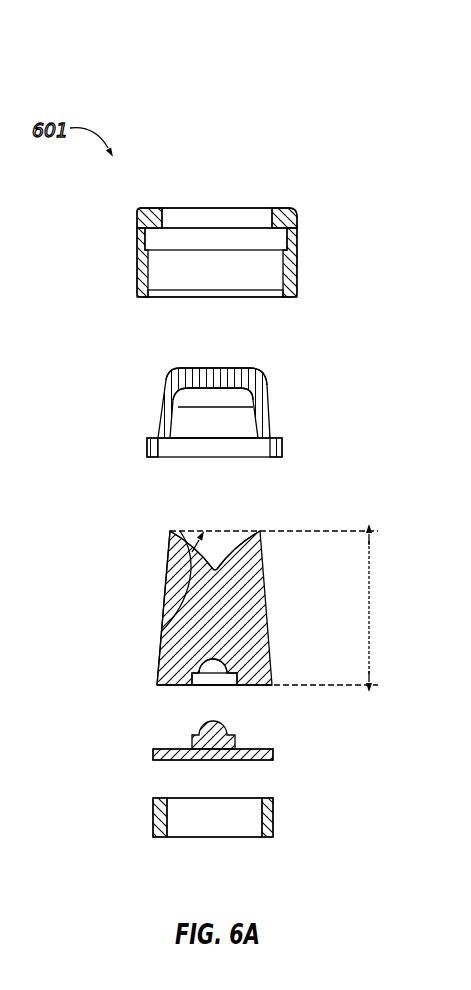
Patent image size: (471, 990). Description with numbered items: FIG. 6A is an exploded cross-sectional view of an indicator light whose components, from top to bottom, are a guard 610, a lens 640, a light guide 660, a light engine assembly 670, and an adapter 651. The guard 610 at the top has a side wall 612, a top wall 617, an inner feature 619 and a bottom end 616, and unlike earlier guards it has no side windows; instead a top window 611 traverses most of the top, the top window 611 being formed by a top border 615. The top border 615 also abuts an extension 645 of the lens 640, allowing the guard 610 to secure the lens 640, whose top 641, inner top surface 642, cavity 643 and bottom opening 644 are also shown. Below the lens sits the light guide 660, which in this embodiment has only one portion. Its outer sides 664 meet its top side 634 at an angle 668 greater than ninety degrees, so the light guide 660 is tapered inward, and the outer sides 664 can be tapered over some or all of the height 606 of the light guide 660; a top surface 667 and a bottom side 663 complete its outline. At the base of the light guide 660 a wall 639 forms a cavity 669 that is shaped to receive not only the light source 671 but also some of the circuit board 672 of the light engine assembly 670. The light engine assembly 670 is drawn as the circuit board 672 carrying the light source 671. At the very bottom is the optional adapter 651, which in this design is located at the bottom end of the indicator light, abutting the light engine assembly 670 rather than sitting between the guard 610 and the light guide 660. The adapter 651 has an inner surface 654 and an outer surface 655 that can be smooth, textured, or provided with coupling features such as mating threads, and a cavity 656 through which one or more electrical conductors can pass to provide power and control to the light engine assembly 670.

The guard 610 is at (305, 248).
The top window 611 is at (229, 216).
The side wall 612 is at (138, 272).
The top border 615 is at (285, 208).
The bottom end of guard 616 is at (291, 297).
The top wall 617 is at (203, 219).
The inner surface of guard 619 is at (143, 217).
The lens 640 is at (279, 422).
The top of lens 641 is at (186, 368).
The inner top surface of lens 642 is at (192, 390).
The lens cavity 643 is at (188, 420).
The bottom opening of lens 644 is at (204, 442).
The extension 645 is at (160, 452).
The light guide 660 is at (274, 602).
The height 606 is at (372, 625).
The top side 634 is at (170, 531).
The top surface of light guide 667 is at (237, 545).
The angle 668 is at (173, 572).
The outer sides 664 is at (158, 648).
The bottom side of light guide 663 is at (166, 686).
The wall 639 is at (216, 657).
The cavity 669 is at (227, 688).
The light engine assembly 670 is at (282, 752).
The light source 671 is at (220, 726).
The circuit board 672 is at (158, 752).
The adapter 651 is at (280, 816).
The inner surface 654 is at (258, 822).
The outer surface 655 is at (152, 815).
The cavity 656 is at (203, 824).